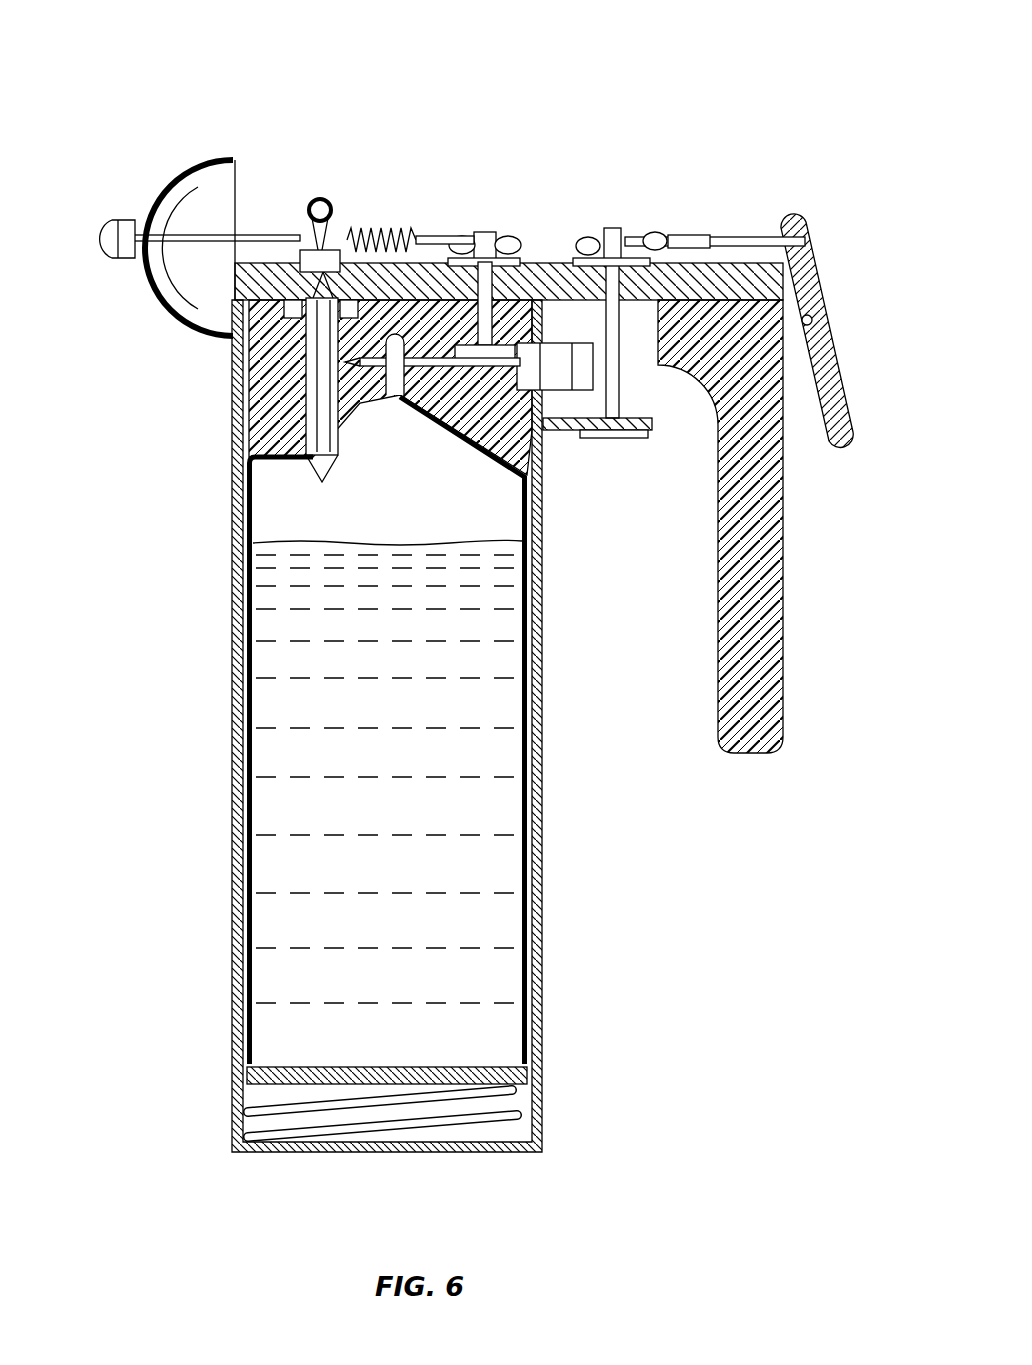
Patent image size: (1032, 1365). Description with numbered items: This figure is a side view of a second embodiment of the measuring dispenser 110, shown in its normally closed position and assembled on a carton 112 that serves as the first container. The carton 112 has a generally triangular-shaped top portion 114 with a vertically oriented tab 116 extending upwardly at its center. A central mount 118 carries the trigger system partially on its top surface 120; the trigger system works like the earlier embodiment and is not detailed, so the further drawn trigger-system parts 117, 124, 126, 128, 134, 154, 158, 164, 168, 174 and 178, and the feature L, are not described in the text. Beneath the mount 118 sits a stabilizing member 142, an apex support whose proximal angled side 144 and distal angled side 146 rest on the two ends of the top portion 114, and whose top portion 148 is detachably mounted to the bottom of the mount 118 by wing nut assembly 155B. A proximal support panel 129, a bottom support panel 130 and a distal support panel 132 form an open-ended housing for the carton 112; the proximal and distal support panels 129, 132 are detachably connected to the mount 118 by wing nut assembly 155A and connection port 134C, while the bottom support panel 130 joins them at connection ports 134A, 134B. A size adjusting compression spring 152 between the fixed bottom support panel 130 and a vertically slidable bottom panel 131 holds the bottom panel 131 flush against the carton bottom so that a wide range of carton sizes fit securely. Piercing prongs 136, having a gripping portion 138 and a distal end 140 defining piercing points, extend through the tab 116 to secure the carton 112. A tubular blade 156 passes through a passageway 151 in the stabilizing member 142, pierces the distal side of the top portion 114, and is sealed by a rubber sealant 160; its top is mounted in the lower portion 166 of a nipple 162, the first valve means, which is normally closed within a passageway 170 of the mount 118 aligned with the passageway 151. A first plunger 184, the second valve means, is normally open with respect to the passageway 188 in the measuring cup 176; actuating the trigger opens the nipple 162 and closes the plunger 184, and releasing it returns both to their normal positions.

The measuring dispenser 110 is at (505, 106).
The carton 112 is at (236, 705).
The top portion 114 is at (560, 480).
The vertically oriented tab 116 is at (402, 352).
The bolt 117 is at (640, 340).
The central mount 118 is at (440, 272).
The top surface 120 is at (565, 262).
The handle 124 is at (765, 638).
The lever 126 is at (835, 385).
The pivot pin 128 is at (812, 318).
The proximal support panel 129 is at (540, 815).
The bottom support panel 130 is at (355, 1155).
The vertically slidable bottom panel 131 is at (420, 1067).
The distal support panel 132 is at (240, 770).
The wing nut 134 is at (700, 238).
The connection port 134A is at (540, 1152).
The connection port 134B is at (235, 1145).
The connection port 134C is at (250, 378).
The piercing prongs 136 is at (556, 437).
The gripping portion 138 is at (562, 343).
The distal end 140 is at (782, 240).
The stabilizing member 142 is at (275, 432).
The proximal angled side 144 is at (540, 600).
The distal angled side 146 is at (330, 455).
The top portion 148 is at (418, 268).
The passageway 151 is at (255, 452).
The size adjusting compression spring 152 is at (398, 228).
The flange 154 is at (600, 432).
The wing nut assembly 155A is at (652, 230).
The wing nut assembly 155B is at (487, 232).
The tubular blade 156 is at (305, 425).
The needle rod 158 is at (325, 410).
The rubber sealant 160 is at (302, 448).
The nipple 162 is at (338, 252).
The loop 164 is at (318, 198).
The lower portion 166 is at (410, 240).
The spring 168 is at (350, 232).
The passageway 170 is at (235, 330).
The float rod 174 is at (300, 238).
The measuring cup 176 is at (190, 322).
The float arc 178 is at (200, 215).
The first plunger 184 is at (108, 228).
The passageway 188 is at (145, 262).
The liquid level L is at (290, 800).